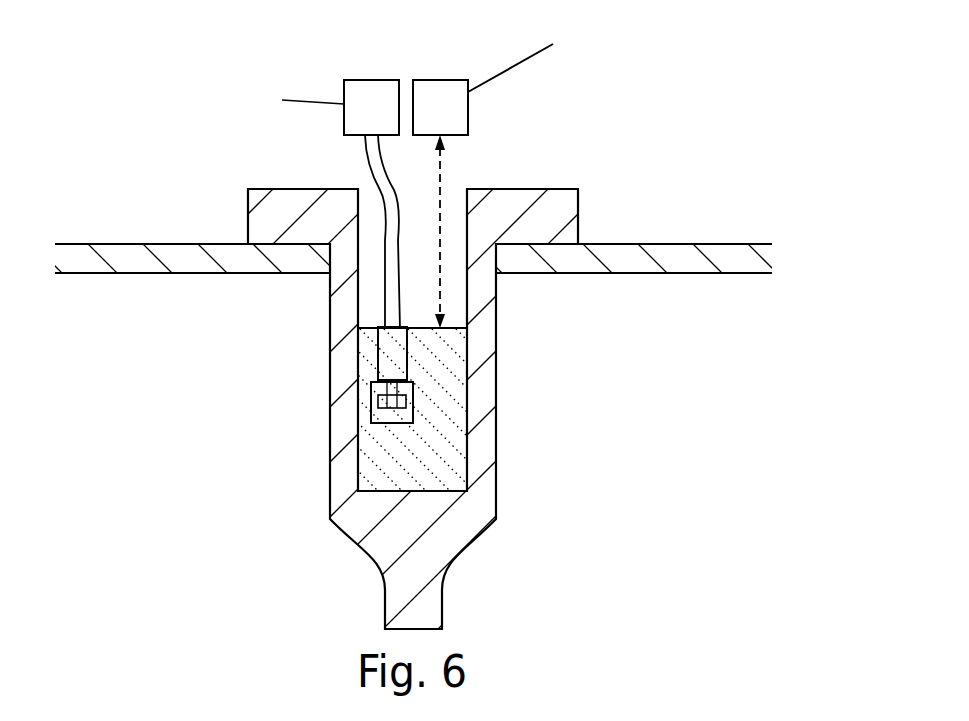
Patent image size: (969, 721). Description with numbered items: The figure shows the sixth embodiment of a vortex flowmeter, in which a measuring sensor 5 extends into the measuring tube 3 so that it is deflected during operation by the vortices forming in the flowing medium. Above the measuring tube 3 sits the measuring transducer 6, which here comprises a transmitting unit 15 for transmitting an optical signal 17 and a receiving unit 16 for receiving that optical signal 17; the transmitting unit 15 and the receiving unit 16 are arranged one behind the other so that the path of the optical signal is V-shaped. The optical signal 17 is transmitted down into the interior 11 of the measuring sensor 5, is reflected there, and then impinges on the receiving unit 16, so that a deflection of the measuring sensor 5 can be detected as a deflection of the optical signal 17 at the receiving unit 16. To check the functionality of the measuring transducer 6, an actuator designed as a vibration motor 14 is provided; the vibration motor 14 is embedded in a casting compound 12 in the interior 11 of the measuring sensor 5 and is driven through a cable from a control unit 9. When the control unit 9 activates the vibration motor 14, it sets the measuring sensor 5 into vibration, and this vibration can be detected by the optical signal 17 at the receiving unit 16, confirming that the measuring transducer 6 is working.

The measuring tube 3 is at (716, 244).
The measuring sensor 5 is at (420, 573).
The measuring transducer 6 is at (500, 211).
The control unit 9 is at (352, 80).
The interior of the measuring sensor 11 is at (374, 298).
The casting compound 12 is at (447, 437).
The vibration motor 14 is at (385, 359).
The transmitting unit 15 is at (562, 70).
The receiving unit 16 is at (448, 80).
The optical signal 17 is at (442, 175).